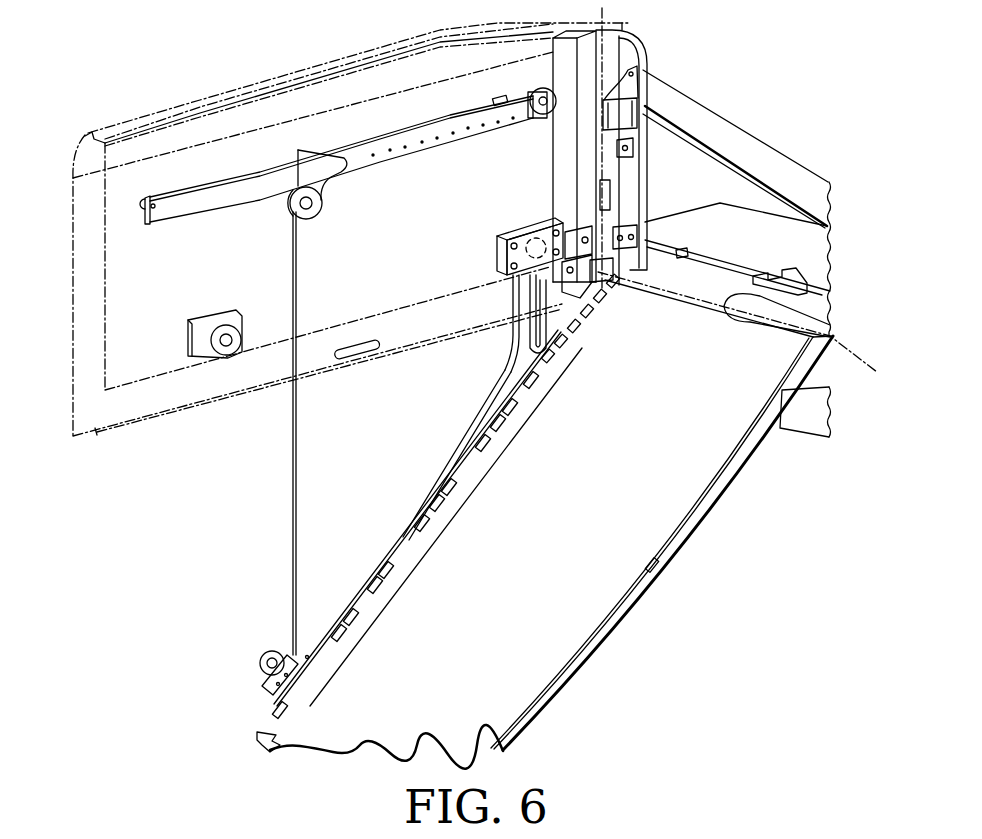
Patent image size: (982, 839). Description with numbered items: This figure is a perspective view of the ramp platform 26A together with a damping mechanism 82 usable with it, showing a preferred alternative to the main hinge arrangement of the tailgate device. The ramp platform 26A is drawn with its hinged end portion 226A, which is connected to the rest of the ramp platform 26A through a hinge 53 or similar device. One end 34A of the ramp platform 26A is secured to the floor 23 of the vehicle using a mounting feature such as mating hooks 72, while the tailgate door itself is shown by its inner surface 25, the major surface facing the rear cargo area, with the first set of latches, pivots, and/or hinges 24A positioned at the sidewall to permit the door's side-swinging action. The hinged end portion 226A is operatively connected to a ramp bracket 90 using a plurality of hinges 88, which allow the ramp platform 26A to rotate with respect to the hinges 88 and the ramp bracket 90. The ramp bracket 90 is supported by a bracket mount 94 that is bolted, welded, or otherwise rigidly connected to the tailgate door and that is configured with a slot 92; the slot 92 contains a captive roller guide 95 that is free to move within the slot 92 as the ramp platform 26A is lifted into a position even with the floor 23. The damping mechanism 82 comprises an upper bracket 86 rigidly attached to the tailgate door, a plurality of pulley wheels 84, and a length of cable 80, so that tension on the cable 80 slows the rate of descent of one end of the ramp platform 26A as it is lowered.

The floor 23 is at (763, 237).
The first set of latches, pivots, and/or hinges 24A is at (640, 90).
The inner surface 25 is at (127, 275).
The ramp platform 26A is at (757, 566).
The one end of ramp platform 34A is at (833, 282).
The hinge 53 is at (878, 376).
The mating hooks 72 is at (740, 277).
The cable 80 is at (292, 508).
The damping mechanism 82 is at (406, 160).
The pulley wheels 84 is at (543, 93).
The upper bracket 86 is at (352, 140).
The hinges 88 is at (340, 615).
The ramp bracket 90 is at (520, 375).
The slot 92 is at (517, 340).
The bracket mount 94 is at (547, 240).
The captive roller guide 95 is at (503, 230).
The hinged end portion 226A is at (835, 338).